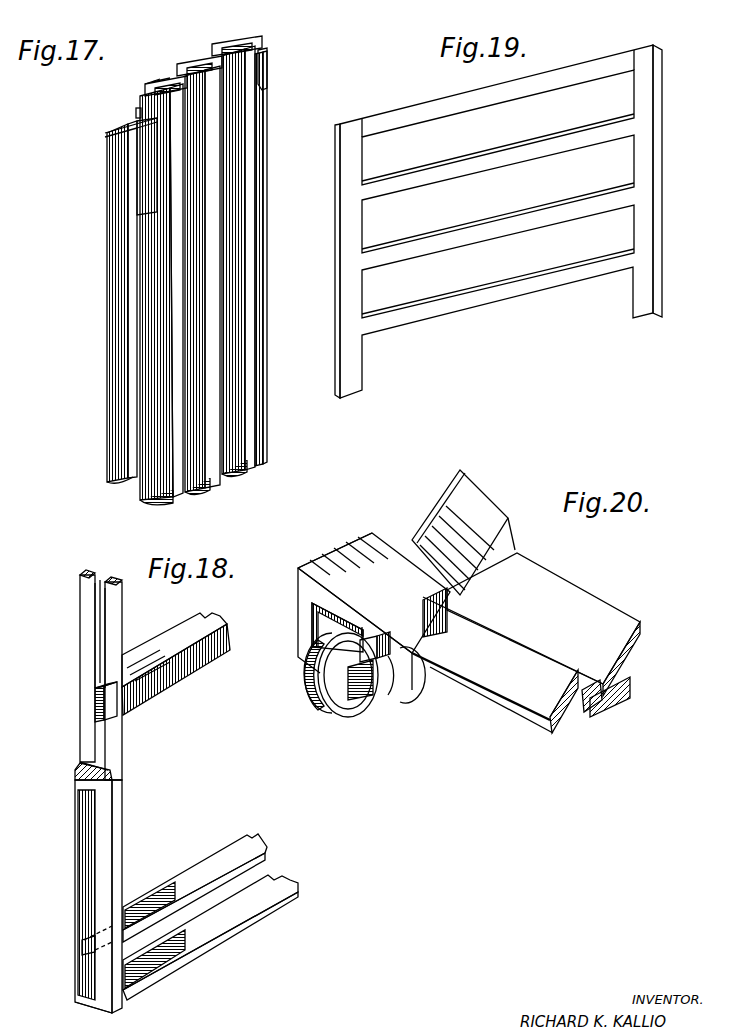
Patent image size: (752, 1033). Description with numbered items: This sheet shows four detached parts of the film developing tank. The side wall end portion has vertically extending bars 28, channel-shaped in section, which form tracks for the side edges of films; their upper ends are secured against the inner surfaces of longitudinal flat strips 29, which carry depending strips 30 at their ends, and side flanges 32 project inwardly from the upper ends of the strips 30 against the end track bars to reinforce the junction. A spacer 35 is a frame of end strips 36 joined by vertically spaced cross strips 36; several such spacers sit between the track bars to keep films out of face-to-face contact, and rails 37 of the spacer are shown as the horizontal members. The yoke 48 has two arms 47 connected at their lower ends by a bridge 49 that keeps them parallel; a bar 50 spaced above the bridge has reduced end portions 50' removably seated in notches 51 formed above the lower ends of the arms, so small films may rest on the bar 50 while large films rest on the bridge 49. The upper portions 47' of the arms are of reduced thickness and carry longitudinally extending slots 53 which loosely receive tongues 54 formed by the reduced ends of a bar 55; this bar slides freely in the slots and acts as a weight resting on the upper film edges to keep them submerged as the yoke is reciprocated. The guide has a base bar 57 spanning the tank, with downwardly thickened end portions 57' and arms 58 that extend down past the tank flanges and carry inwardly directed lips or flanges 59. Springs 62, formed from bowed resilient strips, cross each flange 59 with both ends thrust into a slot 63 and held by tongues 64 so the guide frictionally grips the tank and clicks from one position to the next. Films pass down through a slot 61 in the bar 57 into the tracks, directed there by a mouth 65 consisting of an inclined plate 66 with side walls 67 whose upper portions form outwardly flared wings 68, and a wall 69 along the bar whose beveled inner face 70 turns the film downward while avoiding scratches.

In FIG. 17, the vertically extending bars 28 is at (233, 53).
In FIG. 17, the flat strips 29 is at (282, 40).
In FIG. 17, the depending strips 30 is at (118, 157).
In FIG. 17, the side flanges 32 is at (155, 183).
In FIG. 19, the spacer 35 is at (653, 76).
In FIG. 19, the end bars or strips and cross bars or strips 36 is at (645, 182).
In FIG. 19, the rails of frame 37 is at (542, 89).
In FIG. 18, the arms of yoke 47 is at (74, 888).
In FIG. 18, the upper portions of arms 47' is at (78, 675).
In FIG. 18, the yoke 48 is at (73, 847).
In FIG. 18, the bridge 49 is at (218, 920).
In FIG. 18, the bar 50 is at (195, 879).
In FIG. 18, the reduced end portions of bar 50' is at (76, 955).
In FIG. 18, the notches 51 is at (100, 952).
In FIG. 18, the longitudinally extending slots 53 is at (97, 637).
In FIG. 18, the tongues 54 is at (97, 697).
In FIG. 18, the bar or weight 55 is at (187, 668).
In FIG. 20, the base portion or bar of guide 57 is at (374, 599).
In FIG. 20, the end portions of bar 57' is at (332, 556).
In FIG. 20, the arms 58 is at (308, 635).
In FIG. 20, the lips or flanges 59 is at (345, 672).
In FIG. 20, the slot 61 is at (563, 727).
In FIG. 20, the springs 62 is at (318, 674).
In FIG. 20, the slot in flange 63 is at (373, 700).
In FIG. 20, the tongues 64 is at (380, 640).
In FIG. 20, the mouth 65 is at (532, 550).
In FIG. 20, the plate 66 is at (582, 632).
In FIG. 20, the side walls 67 is at (513, 540).
In FIG. 20, the wings 68 is at (472, 487).
In FIG. 20, the wall or flange 69 is at (543, 672).
In FIG. 20, the inner side face of wall 70 is at (588, 683).